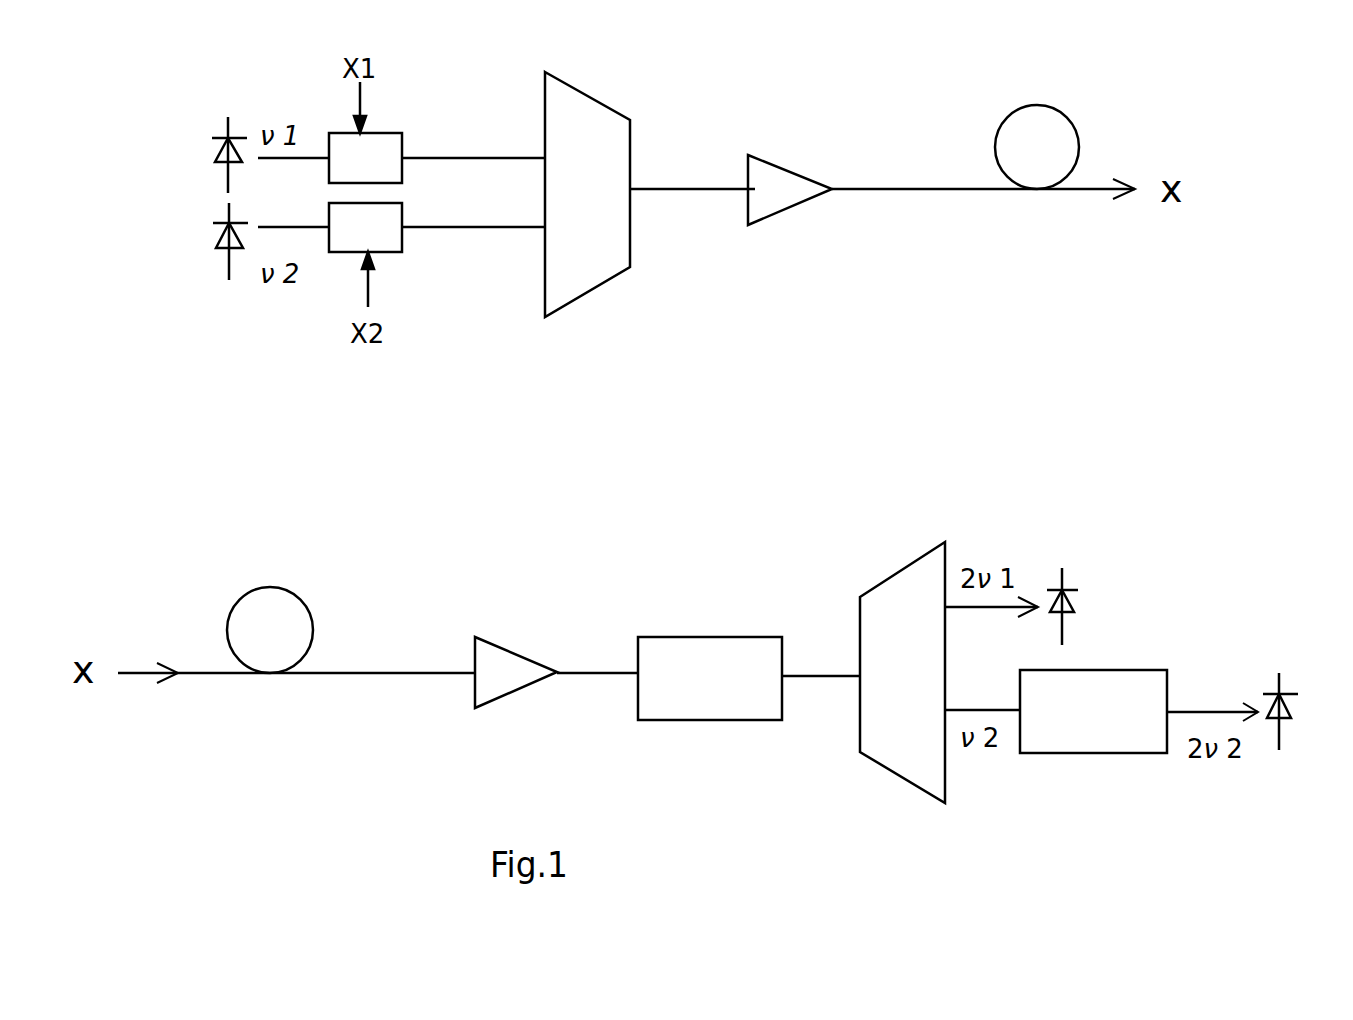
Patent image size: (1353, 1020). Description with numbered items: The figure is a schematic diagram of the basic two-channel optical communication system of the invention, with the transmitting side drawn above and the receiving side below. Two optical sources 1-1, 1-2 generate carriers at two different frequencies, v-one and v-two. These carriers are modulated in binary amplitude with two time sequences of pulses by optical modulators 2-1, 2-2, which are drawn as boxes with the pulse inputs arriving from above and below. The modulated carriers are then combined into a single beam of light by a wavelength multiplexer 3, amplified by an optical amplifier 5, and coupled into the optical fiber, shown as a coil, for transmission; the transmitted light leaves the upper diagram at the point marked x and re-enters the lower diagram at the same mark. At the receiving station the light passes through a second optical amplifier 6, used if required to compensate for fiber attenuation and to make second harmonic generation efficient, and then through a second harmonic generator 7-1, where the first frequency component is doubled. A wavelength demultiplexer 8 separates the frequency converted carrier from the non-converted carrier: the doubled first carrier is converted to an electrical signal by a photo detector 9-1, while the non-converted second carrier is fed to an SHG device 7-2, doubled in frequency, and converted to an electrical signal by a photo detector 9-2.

The optical source 1-1 is at (208, 148).
The optical source 1-2 is at (208, 233).
The optical modulator 2-1 is at (385, 150).
The optical modulator 2-2 is at (392, 245).
The wavelength multiplexer 3 is at (577, 115).
The optical amplifier 5 is at (777, 180).
The optical amplifier 6 is at (510, 673).
The second harmonic generator 7-1 is at (720, 652).
The SHG device 7-2 is at (1127, 735).
The wavelength demultiplexer 8 is at (907, 608).
The photo detector 9-1 is at (1087, 602).
The photo detector 9-2 is at (1287, 665).